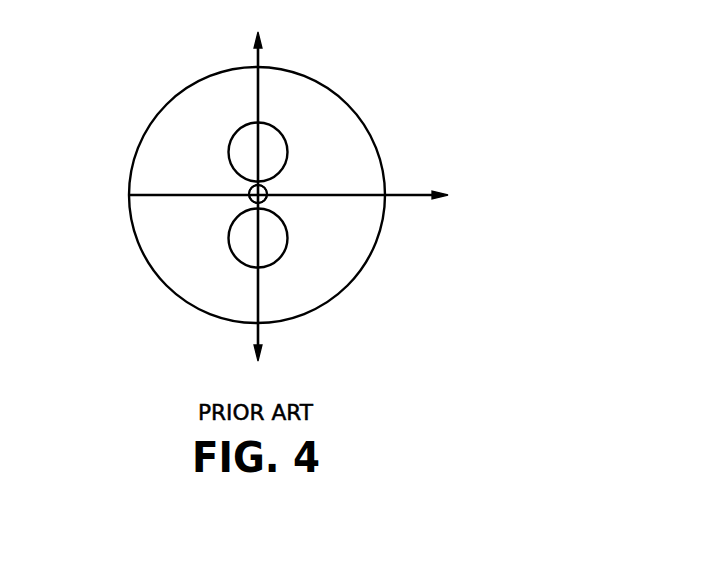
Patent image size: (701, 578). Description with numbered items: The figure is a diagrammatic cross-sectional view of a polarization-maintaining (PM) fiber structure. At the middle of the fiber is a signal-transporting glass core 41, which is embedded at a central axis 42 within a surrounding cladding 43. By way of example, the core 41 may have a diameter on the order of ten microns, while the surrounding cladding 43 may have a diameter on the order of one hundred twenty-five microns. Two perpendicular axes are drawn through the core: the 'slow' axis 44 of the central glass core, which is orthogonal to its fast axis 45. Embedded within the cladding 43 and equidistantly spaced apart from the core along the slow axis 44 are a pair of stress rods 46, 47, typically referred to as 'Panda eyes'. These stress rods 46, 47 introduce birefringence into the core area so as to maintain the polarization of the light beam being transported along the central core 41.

The glass core 41 is at (265, 189).
The central axis 42 is at (265, 200).
The cladding 43 is at (320, 282).
The slow axis 44 is at (253, 333).
The fast axis 45 is at (417, 198).
The stress rod 46 is at (243, 139).
The stress rod 47 is at (242, 233).